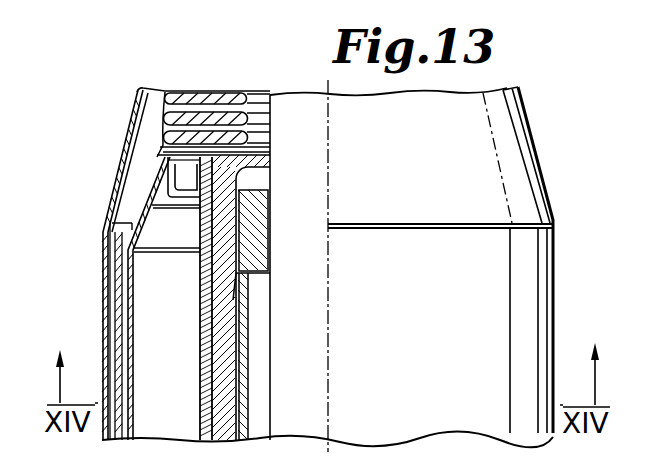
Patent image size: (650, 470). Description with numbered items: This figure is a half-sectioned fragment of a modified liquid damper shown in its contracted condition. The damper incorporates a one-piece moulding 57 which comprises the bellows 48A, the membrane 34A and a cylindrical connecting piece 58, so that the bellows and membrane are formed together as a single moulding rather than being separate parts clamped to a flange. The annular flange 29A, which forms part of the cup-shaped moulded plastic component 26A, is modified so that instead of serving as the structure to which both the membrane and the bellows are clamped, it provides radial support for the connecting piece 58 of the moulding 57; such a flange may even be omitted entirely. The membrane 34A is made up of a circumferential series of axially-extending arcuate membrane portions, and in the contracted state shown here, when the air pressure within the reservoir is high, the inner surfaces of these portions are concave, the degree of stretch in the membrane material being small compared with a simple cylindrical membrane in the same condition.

The bellows 48A is at (165, 92).
The annular flange 29A is at (170, 165).
The connecting piece 58 is at (160, 178).
The one-piece moulding 57 is at (148, 204).
The membrane 34A is at (130, 332).
The cup-shaped moulded plastic component 26A is at (205, 403).